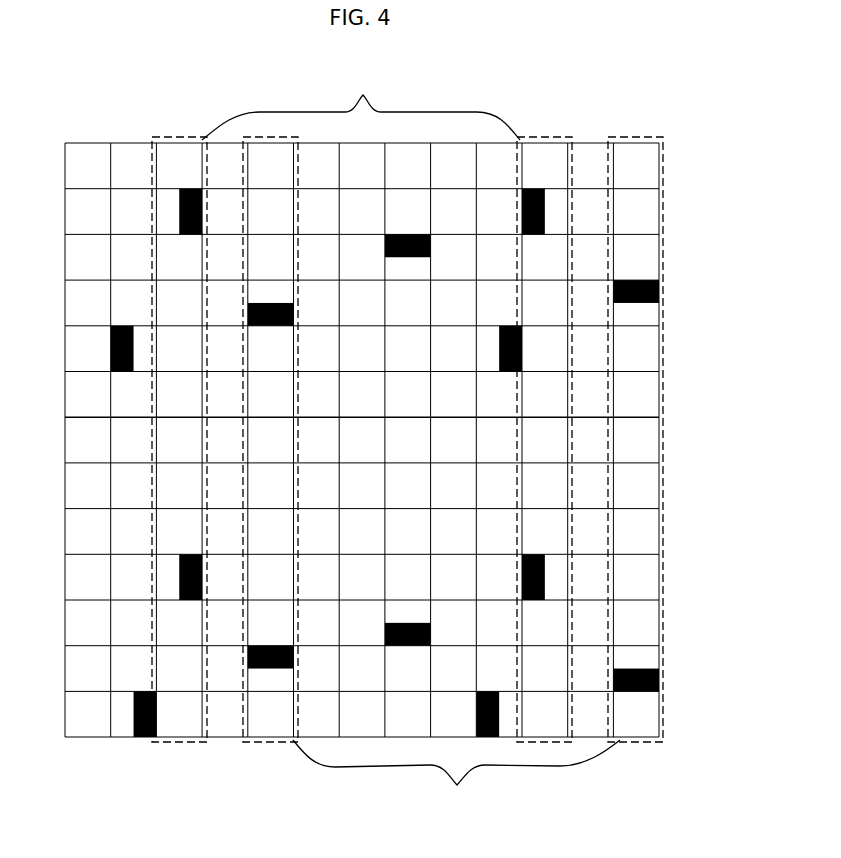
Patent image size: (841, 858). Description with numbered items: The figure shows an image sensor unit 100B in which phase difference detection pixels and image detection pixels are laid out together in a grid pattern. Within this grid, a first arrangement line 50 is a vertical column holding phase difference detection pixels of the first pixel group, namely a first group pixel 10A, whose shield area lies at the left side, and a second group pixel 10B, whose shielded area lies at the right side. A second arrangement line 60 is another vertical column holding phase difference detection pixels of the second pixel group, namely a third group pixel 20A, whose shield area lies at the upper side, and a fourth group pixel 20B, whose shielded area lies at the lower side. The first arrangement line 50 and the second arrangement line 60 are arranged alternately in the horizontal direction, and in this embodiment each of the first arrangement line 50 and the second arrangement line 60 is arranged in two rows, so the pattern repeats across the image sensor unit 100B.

The image sensor unit 100B is at (117, 80).
The first arrangement line 50 is at (361, 105).
The second arrangement line 60 is at (456, 773).
The first group pixel 10A is at (188, 187).
The second group pixel 10B is at (550, 188).
The third group pixel 20A is at (255, 693).
The fourth group pixel 20B is at (630, 740).